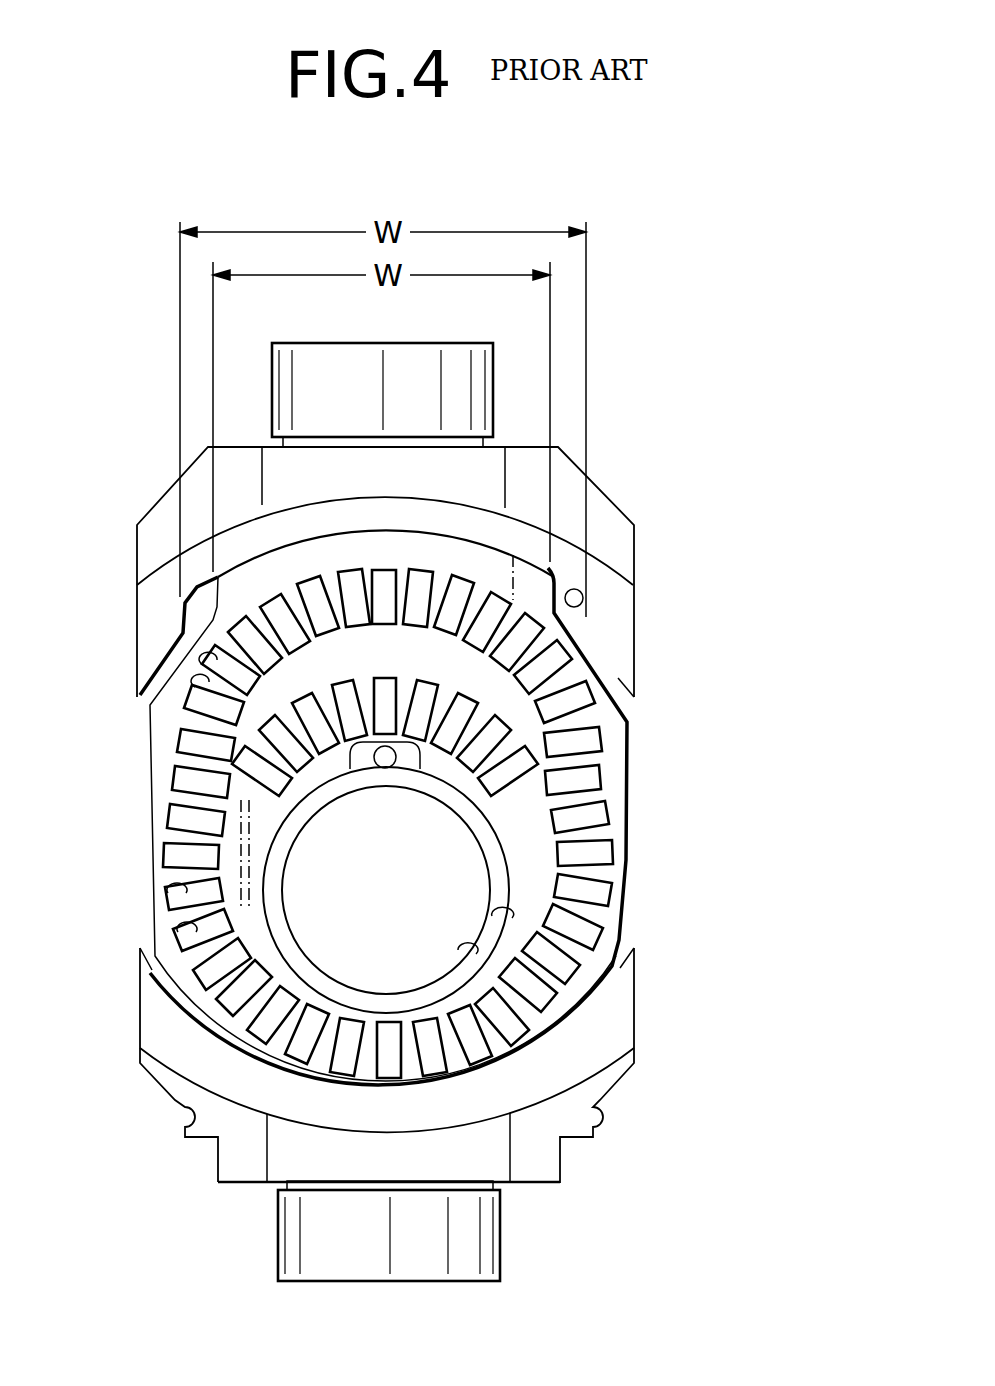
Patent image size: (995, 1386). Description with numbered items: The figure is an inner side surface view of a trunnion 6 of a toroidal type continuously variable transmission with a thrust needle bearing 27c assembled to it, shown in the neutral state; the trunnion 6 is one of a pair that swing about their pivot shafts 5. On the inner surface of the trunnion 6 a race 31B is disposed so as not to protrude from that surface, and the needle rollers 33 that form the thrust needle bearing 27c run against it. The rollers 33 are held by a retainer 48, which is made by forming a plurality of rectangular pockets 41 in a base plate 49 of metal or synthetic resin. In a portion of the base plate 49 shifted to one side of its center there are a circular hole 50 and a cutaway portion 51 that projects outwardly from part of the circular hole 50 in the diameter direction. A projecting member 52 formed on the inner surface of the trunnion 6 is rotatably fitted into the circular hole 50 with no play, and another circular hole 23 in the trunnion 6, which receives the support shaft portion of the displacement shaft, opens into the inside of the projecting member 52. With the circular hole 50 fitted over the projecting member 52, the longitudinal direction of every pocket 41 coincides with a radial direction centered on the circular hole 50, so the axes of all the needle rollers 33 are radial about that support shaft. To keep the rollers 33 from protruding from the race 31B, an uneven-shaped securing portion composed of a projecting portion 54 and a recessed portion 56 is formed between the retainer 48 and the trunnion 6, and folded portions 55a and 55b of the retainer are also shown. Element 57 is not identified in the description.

The pivot shaft 5 is at (480, 378).
The trunnion 6 is at (612, 497).
The needle rollers 33 is at (337, 563).
The projecting portion 54 is at (410, 548).
The recessed portion 56 is at (582, 602).
The folded portion 55a is at (620, 618).
The folded portion 55b is at (590, 1055).
The thrust needle bearing 27c is at (652, 722).
The retainer 48 is at (613, 760).
The base plate 49 is at (603, 856).
The projecting member 52 is at (500, 889).
The circular hole 50 is at (495, 916).
The pocket 41 is at (198, 684).
The race 31B is at (597, 990).
The circular hole 23 is at (587, 1053).
The positioning pin 57 is at (385, 768).
The cutaway portion 51 is at (408, 762).